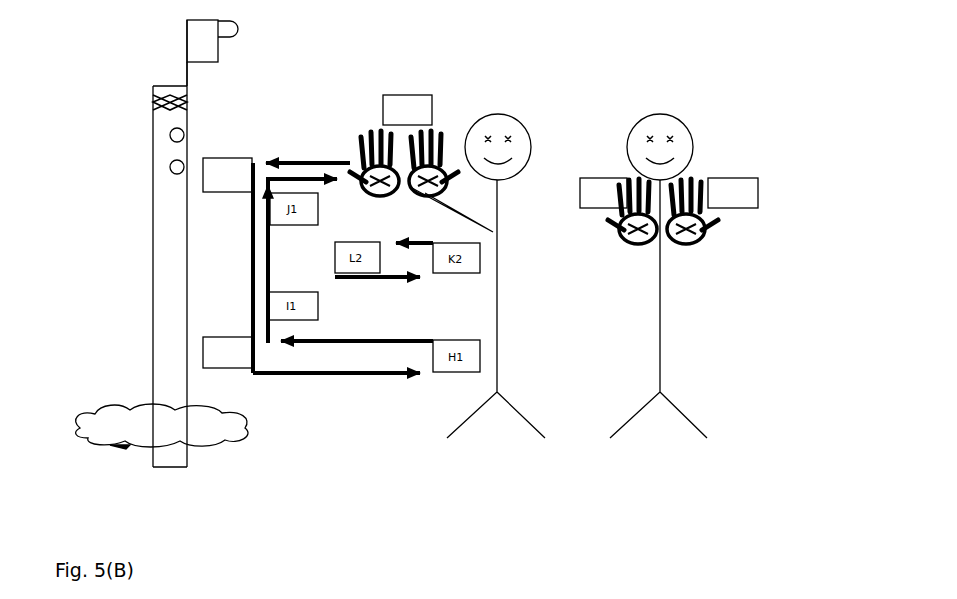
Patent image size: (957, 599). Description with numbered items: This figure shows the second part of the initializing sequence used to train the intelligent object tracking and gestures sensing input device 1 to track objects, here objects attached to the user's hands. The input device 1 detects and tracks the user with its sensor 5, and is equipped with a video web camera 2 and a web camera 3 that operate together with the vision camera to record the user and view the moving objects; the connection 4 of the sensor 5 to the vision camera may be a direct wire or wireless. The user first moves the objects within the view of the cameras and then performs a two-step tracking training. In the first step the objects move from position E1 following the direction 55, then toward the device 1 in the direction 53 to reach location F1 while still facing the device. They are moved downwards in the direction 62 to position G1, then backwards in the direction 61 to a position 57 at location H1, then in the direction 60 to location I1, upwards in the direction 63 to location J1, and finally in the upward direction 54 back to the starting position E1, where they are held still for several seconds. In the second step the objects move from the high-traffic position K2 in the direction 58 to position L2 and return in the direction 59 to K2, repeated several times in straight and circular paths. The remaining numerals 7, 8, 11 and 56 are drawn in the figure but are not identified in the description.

The intelligent object tracking and gestures sensing input device 1 is at (152, 225).
The video web camera 2 is at (152, 160).
The web camera 3 is at (152, 127).
The connection 4 is at (185, 70).
The sensor 5 is at (135, 102).
The network cloud 7 is at (120, 446).
The camera unit 8 is at (185, 35).
The distance between users 11 is at (658, 313).
The direction 53 is at (285, 160).
The upward direction 54 is at (318, 176).
The direction 55 is at (592, 175).
The mouth/speech unit M2 56 is at (760, 195).
The position 57 is at (413, 374).
The direction 58 is at (398, 250).
The direction 59 is at (349, 281).
The direction 60 is at (317, 345).
The direction 61 is at (268, 378).
The direction 62 is at (250, 288).
The direction 63 is at (266, 257).